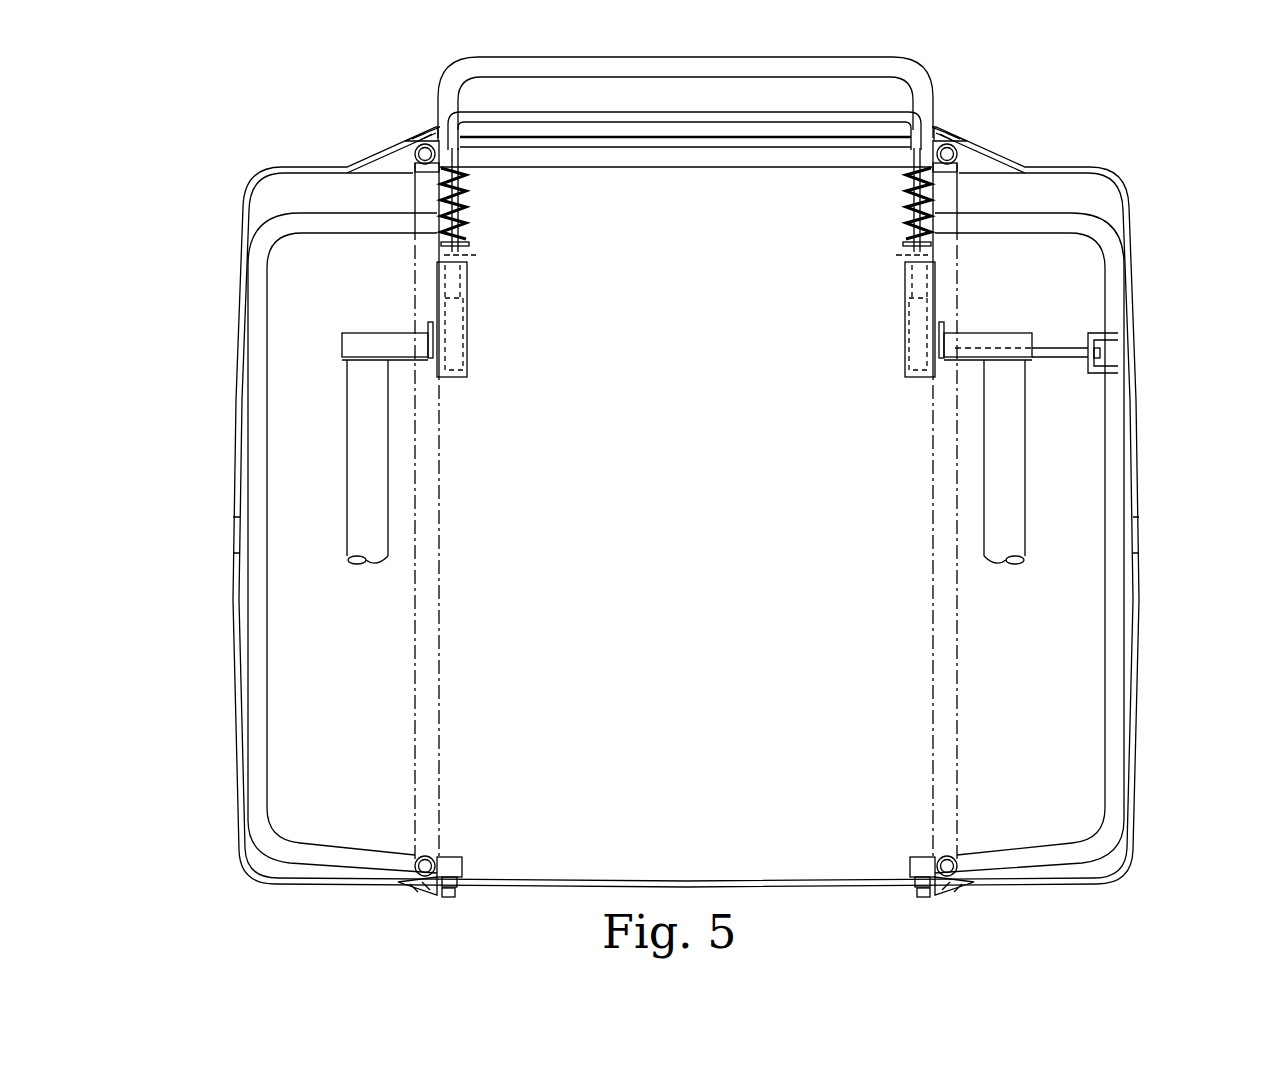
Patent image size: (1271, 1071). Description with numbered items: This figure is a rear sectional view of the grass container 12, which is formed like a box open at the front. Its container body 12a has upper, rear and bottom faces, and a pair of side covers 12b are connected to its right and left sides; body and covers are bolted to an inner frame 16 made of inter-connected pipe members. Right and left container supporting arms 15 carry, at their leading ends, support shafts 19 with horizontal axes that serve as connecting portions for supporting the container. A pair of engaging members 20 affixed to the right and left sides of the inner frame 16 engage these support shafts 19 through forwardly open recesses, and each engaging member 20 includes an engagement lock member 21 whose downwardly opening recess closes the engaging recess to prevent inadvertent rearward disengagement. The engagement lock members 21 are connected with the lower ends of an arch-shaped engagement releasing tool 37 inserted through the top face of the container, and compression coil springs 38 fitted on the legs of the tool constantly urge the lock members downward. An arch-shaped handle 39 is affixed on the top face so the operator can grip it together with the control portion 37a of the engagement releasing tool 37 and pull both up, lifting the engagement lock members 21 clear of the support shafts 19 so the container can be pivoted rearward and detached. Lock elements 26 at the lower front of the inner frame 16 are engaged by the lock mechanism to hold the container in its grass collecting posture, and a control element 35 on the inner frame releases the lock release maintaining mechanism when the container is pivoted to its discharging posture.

The grass container 12 is at (1124, 188).
The container body 12a is at (510, 140).
The side cover 12b is at (231, 482).
The container supporting arm 15 is at (355, 528).
The inner frame 16 is at (272, 670).
The support shaft 19 is at (375, 343).
The engaging member 20 is at (454, 378).
The engagement lock member 21 is at (470, 316).
The lock element 26 is at (350, 855).
The control element 35 is at (1048, 362).
The engagement releasing tool 37 is at (461, 156).
The control portion 37a is at (641, 112).
The compression coil spring 38 is at (466, 218).
The handle 39 is at (924, 78).